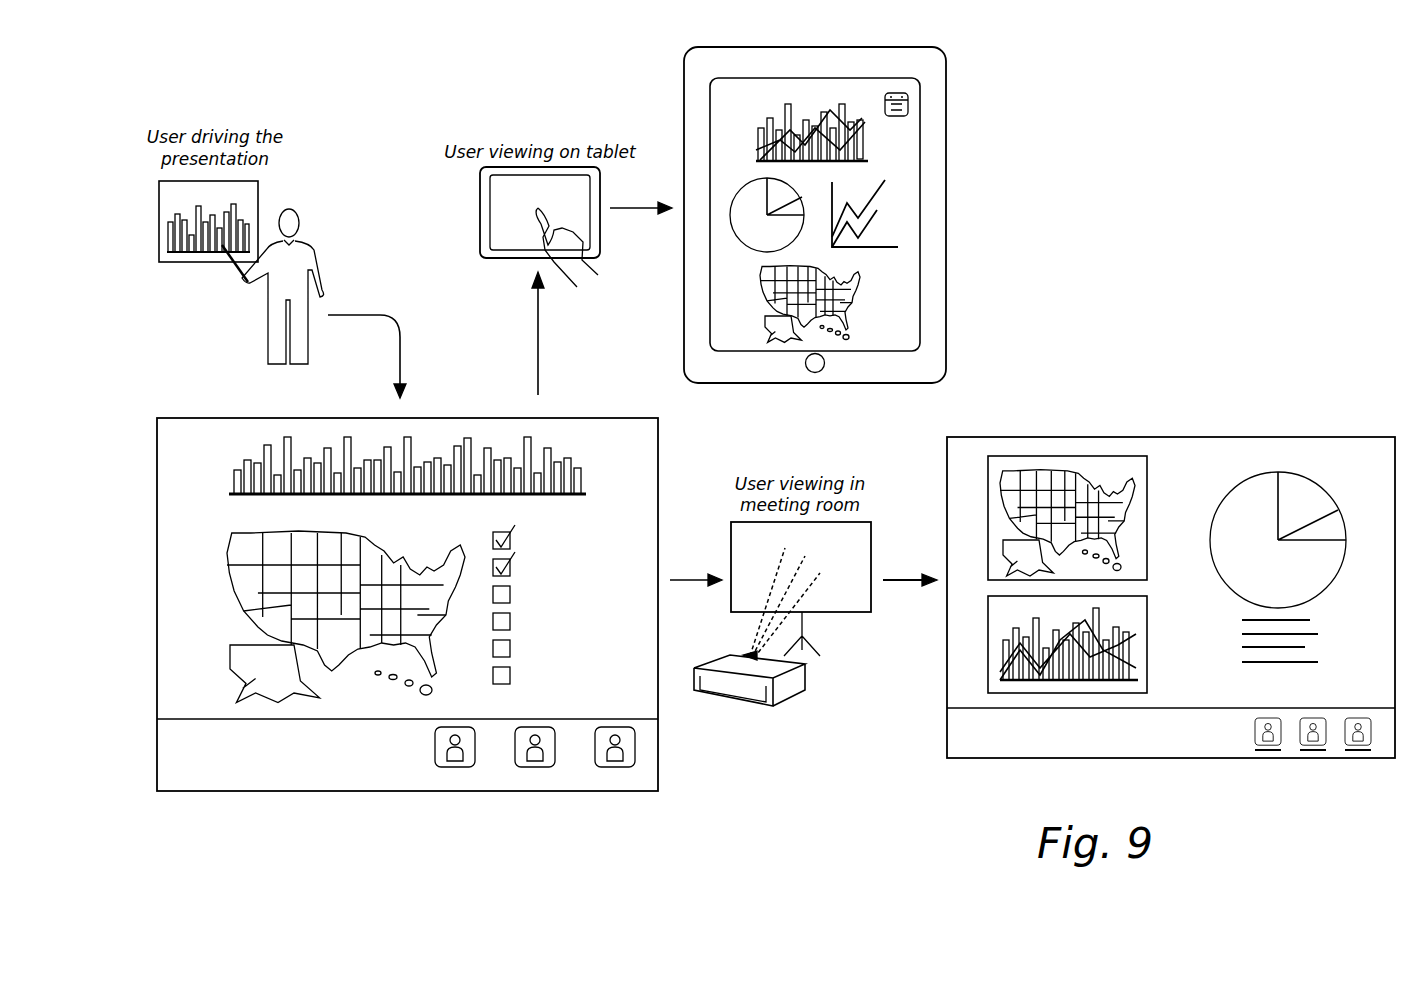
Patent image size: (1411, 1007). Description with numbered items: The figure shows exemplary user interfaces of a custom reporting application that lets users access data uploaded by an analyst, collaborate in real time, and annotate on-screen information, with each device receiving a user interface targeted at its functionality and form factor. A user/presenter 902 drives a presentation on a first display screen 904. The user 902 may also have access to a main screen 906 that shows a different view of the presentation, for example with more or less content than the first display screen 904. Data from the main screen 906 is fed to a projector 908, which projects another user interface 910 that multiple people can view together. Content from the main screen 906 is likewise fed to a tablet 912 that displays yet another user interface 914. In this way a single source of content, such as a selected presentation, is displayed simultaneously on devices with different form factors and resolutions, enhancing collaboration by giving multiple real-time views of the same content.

The user/presenter 902 is at (318, 254).
The first display screen 904 is at (183, 262).
The main screen 906 is at (200, 418).
The projector 908 is at (720, 700).
The user interface 910 is at (1005, 437).
The tablet 912 is at (480, 190).
The user interface 914 is at (684, 90).